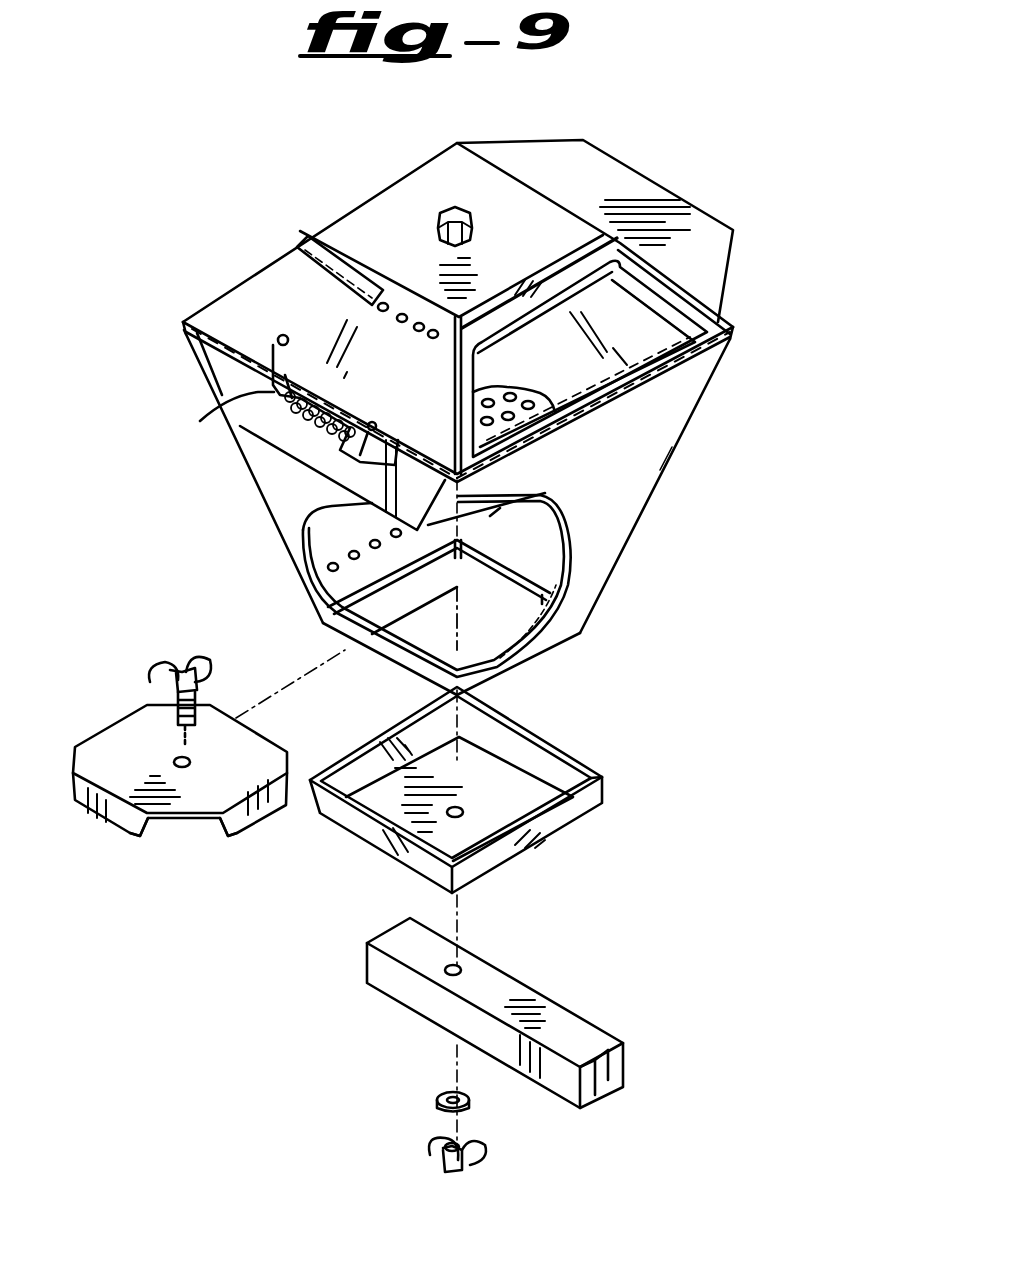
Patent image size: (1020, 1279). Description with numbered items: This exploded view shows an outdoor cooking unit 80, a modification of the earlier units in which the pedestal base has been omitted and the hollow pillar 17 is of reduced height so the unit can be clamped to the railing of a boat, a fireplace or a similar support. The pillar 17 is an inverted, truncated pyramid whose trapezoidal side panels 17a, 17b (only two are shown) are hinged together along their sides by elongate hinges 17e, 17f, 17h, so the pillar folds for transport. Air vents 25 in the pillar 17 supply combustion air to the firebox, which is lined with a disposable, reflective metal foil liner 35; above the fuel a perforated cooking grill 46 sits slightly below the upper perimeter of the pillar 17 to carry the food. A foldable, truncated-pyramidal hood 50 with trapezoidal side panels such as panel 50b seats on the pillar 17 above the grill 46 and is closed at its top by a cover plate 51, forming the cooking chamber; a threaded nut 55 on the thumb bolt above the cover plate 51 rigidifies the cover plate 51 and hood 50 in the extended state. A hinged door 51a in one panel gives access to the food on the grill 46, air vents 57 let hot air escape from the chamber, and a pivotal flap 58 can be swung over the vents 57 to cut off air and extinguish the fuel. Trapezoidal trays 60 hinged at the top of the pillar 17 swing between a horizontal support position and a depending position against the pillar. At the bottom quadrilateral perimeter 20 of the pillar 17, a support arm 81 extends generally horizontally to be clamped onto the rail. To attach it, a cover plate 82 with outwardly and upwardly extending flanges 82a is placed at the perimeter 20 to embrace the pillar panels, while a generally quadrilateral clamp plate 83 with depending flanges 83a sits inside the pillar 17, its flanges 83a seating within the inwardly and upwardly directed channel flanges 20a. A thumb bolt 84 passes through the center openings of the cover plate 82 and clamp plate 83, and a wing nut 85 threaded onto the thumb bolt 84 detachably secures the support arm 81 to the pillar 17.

The outdoor cooking unit 80 is at (125, 190).
The pillar 17 is at (735, 440).
The side panel of the pillar 17a is at (662, 454).
The side panel of the pillar 17b is at (275, 465).
The hinge 17e is at (442, 690).
The hinge 17f is at (262, 500).
The hinge 17h is at (648, 508).
The lower quadrilateral perimeter 20 is at (520, 672).
The channel flanges 20a is at (570, 634).
The air vents 25 is at (354, 556).
The foil liner 35 is at (500, 512).
The cooking grill 46 is at (505, 428).
The hood 50 is at (322, 210).
The side panel of the hood 50b is at (250, 297).
The cover plate 51 is at (358, 205).
The door 51a is at (658, 337).
The threaded nut 55 is at (452, 208).
The air vents 57 is at (415, 320).
The pivotal flap 58 is at (300, 247).
The tray 60 is at (660, 150).
The support arm 81 is at (570, 1037).
The cover plate 82 is at (593, 781).
The flanges 82a is at (585, 805).
The clamp plate 83 is at (82, 735).
The depending flanges 83a is at (240, 830).
The thumb bolt 84 is at (202, 658).
The wing nut 85 is at (478, 1160).